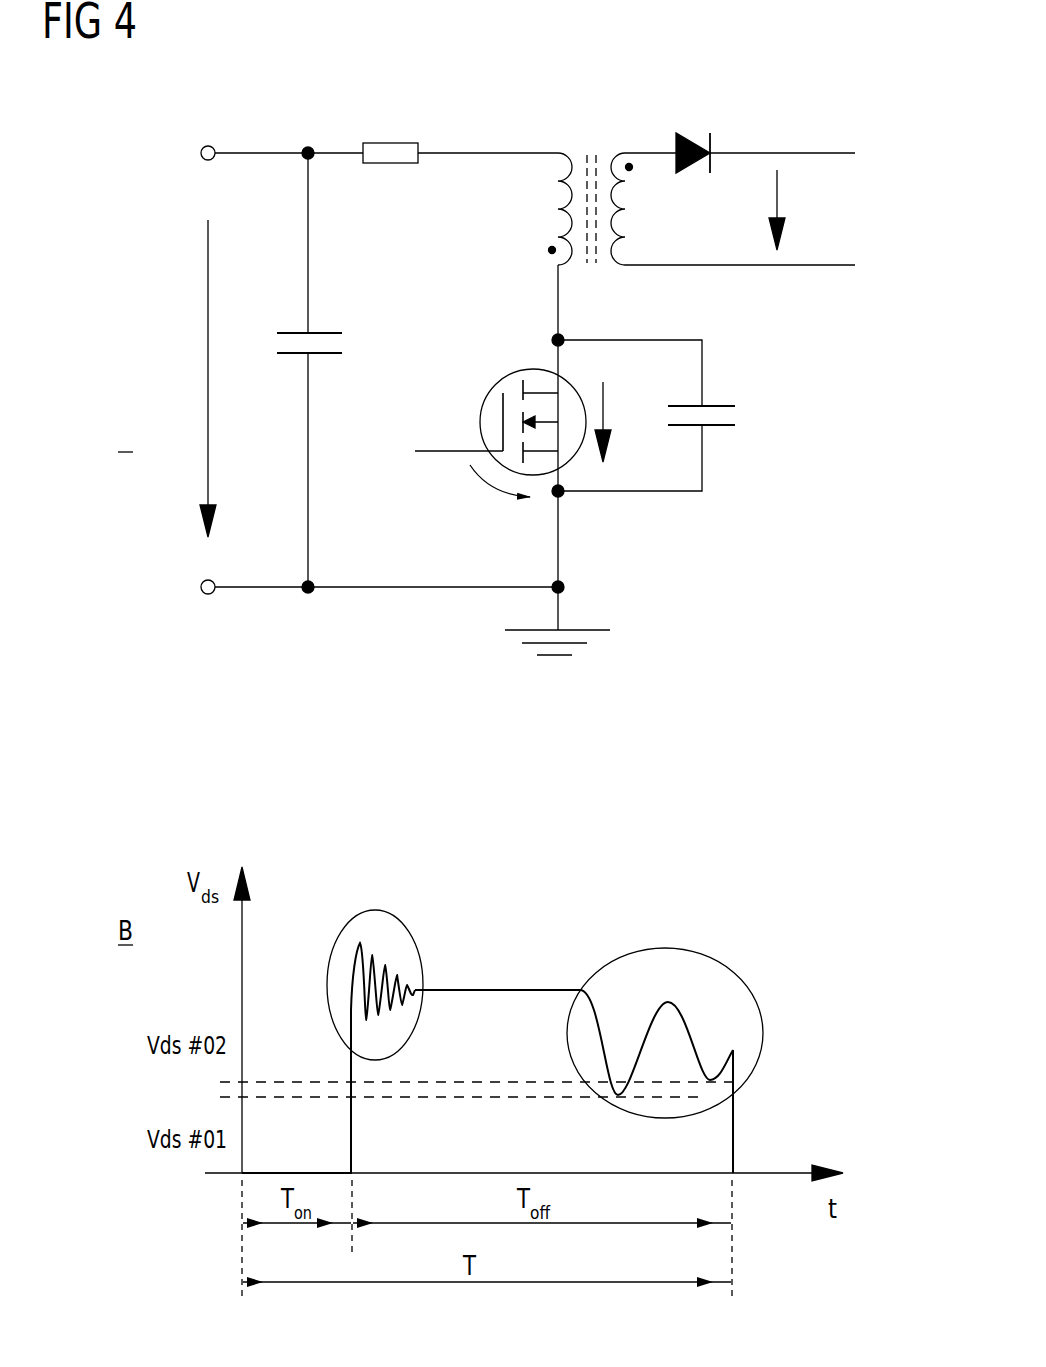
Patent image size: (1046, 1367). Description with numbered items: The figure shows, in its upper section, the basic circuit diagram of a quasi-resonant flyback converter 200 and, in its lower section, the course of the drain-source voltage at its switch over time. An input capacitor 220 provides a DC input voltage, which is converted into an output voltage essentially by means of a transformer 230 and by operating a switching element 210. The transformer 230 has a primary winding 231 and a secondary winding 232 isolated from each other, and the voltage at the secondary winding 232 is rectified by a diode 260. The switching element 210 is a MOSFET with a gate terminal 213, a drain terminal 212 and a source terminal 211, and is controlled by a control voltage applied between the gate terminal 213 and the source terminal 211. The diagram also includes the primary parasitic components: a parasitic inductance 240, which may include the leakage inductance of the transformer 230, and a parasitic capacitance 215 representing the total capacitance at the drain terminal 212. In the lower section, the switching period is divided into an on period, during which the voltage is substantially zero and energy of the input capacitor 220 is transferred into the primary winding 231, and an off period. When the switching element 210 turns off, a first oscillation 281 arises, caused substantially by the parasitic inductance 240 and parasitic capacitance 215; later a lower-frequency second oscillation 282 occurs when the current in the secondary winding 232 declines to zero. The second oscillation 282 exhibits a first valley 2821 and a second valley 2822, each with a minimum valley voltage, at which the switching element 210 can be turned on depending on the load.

The QR flyback converter 200 is at (240, 112).
The parasitic inductance 240 is at (393, 132).
The input capacitor 220 is at (328, 315).
The transformer 230 is at (622, 139).
The primary winding 231 is at (562, 115).
The secondary winding 232 is at (617, 115).
The diode 260 is at (695, 130).
The switching element 210 is at (470, 480).
The source terminal 211 is at (565, 494).
The drain terminal 212 is at (563, 338).
The gate terminal 213 is at (440, 448).
The parasitic capacitance 215 is at (725, 390).
The first oscillation 281 is at (375, 905).
The second oscillation 282 is at (657, 947).
The first valley 2821 is at (628, 1093).
The second valley 2822 is at (727, 1098).